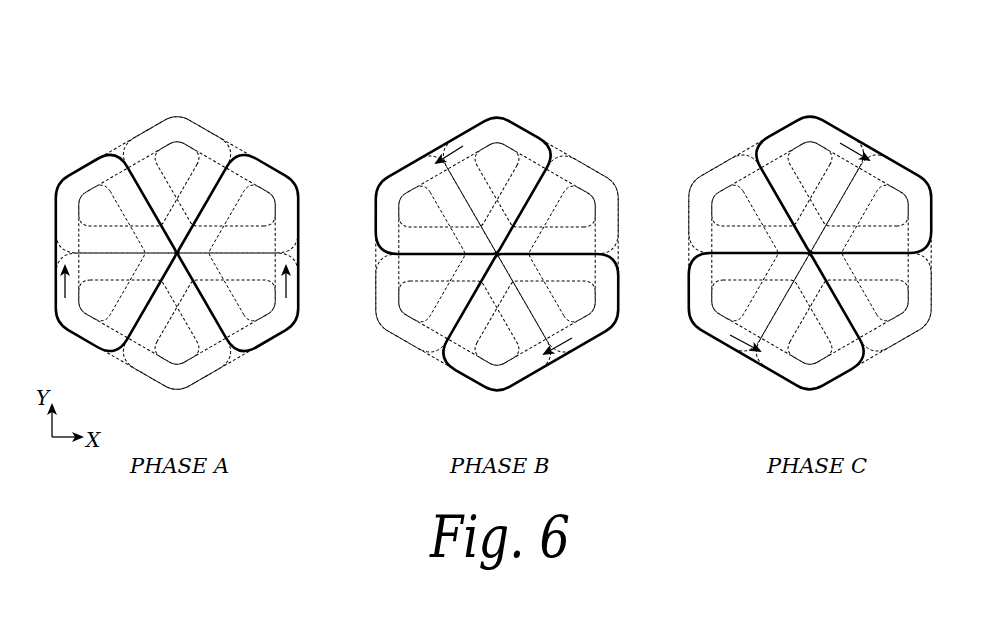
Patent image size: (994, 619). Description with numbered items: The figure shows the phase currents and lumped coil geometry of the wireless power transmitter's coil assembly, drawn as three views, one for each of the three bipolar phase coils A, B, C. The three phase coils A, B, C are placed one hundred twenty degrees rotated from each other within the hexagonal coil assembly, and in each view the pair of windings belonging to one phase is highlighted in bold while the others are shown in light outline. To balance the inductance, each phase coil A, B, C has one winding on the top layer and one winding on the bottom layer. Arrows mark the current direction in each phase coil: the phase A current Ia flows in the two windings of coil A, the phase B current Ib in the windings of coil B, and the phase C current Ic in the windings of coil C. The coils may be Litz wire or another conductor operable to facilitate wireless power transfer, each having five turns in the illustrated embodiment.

The phase coil A is at (105, 172).
The phase coil B is at (403, 187).
The phase coil C is at (788, 137).
The phase A current Ia is at (178, 282).
The phase B current Ib is at (517, 261).
The phase C current Ic is at (787, 238).